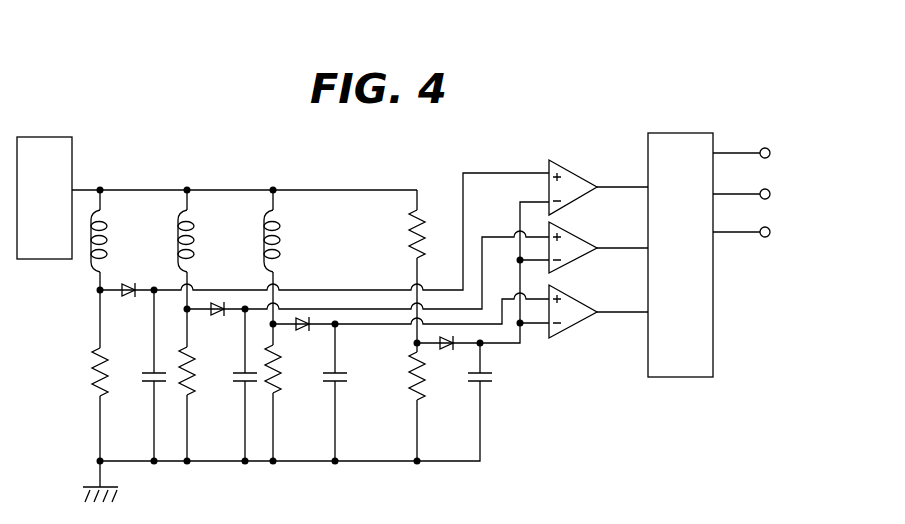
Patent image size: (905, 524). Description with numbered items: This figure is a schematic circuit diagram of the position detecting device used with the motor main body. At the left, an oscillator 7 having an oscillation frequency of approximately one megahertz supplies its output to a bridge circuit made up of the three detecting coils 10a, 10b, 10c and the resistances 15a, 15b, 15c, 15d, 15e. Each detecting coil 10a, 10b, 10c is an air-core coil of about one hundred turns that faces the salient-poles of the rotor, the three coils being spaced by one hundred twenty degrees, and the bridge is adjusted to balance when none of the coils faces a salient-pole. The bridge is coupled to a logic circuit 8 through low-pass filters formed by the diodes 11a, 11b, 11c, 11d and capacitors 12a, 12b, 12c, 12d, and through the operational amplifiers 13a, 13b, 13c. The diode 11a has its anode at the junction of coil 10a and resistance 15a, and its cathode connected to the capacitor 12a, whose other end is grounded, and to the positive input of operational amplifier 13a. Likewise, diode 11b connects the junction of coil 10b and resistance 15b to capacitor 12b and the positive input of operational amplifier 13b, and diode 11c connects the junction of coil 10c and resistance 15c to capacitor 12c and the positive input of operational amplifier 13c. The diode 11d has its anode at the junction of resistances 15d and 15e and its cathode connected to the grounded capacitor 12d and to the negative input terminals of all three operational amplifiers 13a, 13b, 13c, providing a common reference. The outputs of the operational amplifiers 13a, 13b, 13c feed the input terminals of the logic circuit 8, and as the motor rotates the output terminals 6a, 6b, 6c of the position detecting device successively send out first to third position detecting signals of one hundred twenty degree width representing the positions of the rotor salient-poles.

The oscillator 7 is at (40, 137).
The logic circuit 8 is at (690, 113).
The detecting coil 10a is at (110, 236).
The detecting coil 10b is at (197, 236).
The detecting coil 10c is at (284, 235).
The diode 11a is at (128, 297).
The diode 11b is at (218, 317).
The diode 11c is at (300, 332).
The diode 11d is at (446, 352).
The capacitor 12a is at (142, 380).
The capacitor 12b is at (233, 380).
The capacitor 12c is at (348, 378).
The capacitor 12d is at (493, 378).
The operational amplifier 13a is at (570, 166).
The operational amplifier 13b is at (576, 231).
The operational amplifier 13c is at (576, 292).
The resistance 15a is at (95, 390).
The resistance 15b is at (192, 392).
The resistance 15c is at (276, 385).
The resistance 15d is at (410, 237).
The resistance 15e is at (414, 393).
The output terminal 6a is at (770, 153).
The output terminal 6b is at (770, 194).
The output terminal 6c is at (770, 232).